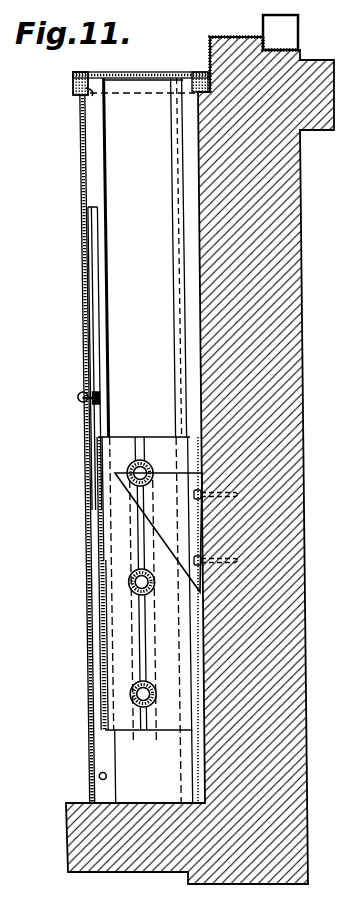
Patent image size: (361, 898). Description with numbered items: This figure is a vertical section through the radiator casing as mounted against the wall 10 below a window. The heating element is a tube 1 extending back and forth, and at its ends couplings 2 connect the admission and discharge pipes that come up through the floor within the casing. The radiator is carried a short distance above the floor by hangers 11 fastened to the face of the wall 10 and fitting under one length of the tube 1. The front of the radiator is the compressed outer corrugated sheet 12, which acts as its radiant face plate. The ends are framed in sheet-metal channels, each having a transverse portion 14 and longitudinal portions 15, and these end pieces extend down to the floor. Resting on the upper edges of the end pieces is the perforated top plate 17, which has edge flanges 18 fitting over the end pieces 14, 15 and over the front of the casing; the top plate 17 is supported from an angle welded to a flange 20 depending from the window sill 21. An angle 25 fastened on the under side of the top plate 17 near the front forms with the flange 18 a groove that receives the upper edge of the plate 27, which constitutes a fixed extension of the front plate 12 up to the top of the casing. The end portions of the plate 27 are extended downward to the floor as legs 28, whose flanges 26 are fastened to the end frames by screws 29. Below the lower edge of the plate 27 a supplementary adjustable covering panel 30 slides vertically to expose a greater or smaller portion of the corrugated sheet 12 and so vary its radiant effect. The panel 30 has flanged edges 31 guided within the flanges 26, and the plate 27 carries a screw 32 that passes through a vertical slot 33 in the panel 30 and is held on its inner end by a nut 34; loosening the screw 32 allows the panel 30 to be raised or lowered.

The tube 1 is at (146, 590).
The couplings 2 is at (146, 467).
The wall 10 is at (287, 306).
The hangers 11 is at (177, 620).
The outer corrugated sheet 12 is at (102, 630).
The transverse portion 14 is at (141, 257).
The longitudinal portions 15 is at (90, 732).
The top plate 17 is at (137, 64).
The edge flanges 18 is at (74, 88).
The flange 20 is at (210, 48).
The window sill 21 is at (246, 26).
The angle 25 is at (91, 93).
The flanges 26 is at (97, 160).
The plate 27 is at (80, 185).
The legs 28 is at (90, 672).
The screws 29 is at (98, 778).
The adjustable covering panel 30 is at (86, 535).
The flanged edges 31 is at (96, 332).
The screw 32 is at (79, 401).
The vertical slot 33 is at (91, 372).
The nut 34 is at (100, 410).